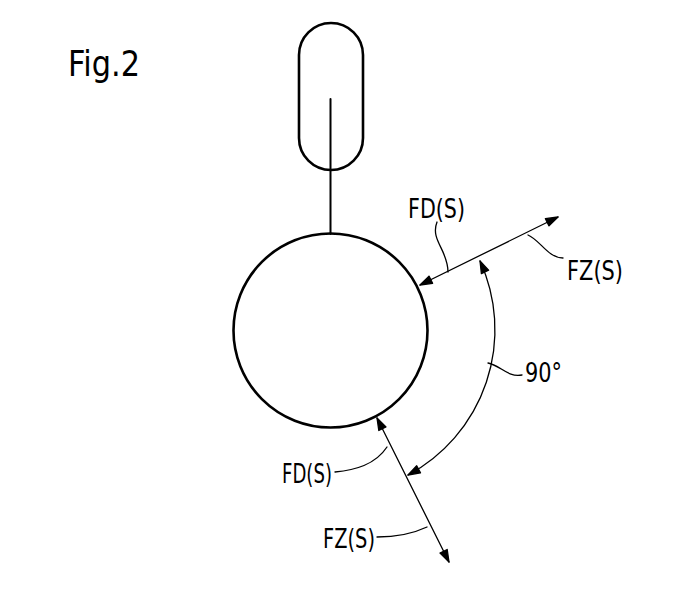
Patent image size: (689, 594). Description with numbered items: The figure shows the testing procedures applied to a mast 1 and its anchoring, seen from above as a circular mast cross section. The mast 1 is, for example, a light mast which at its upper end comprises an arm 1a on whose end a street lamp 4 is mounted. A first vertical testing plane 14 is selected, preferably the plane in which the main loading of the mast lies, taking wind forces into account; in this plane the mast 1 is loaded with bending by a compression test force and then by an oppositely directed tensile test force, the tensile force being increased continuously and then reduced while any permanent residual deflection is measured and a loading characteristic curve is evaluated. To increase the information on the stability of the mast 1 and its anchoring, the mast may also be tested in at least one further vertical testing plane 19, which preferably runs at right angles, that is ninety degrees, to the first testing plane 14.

The mast 1 is at (247, 278).
The arm 1a is at (330, 198).
The street lamp 4 is at (355, 88).
The further vertical testing plane 19 is at (505, 243).
The vertical testing plane 14 is at (412, 490).